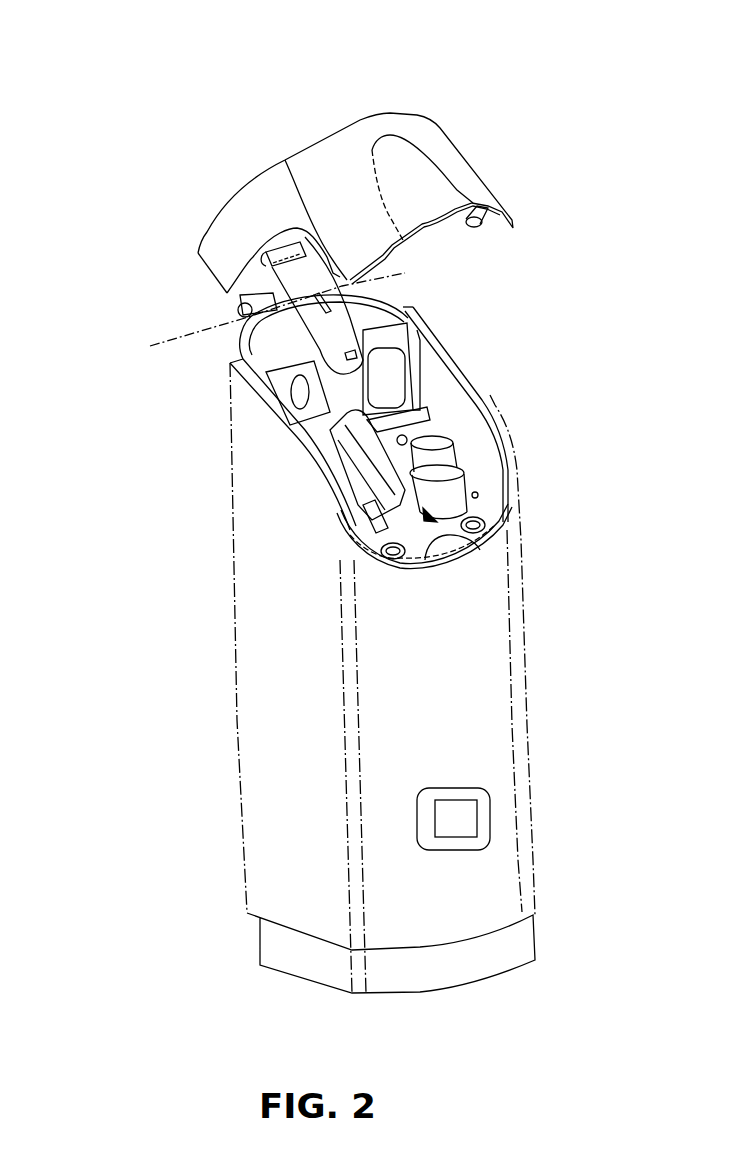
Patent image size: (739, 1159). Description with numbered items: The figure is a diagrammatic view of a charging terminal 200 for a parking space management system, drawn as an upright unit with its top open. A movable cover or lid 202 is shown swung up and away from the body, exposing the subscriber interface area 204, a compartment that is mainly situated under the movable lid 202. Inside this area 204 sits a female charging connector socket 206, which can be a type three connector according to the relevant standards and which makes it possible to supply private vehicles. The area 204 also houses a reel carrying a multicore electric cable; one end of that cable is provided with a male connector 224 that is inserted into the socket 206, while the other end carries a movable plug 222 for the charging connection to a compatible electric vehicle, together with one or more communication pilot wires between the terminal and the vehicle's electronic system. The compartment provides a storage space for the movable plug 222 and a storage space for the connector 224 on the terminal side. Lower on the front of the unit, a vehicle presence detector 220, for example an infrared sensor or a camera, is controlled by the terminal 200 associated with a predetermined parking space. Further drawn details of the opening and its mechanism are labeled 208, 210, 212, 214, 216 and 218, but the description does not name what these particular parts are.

The charging terminal 200 is at (177, 68).
The movable lid 202 is at (462, 128).
The subscriber interface area 204 is at (468, 298).
The female charging connector socket 206 is at (390, 385).
The hinge axis 208 is at (167, 340).
The fastener boss 210 is at (483, 520).
The fastener boss 212 is at (393, 553).
The housing rim 214 is at (503, 537).
The floor plate 216 is at (453, 553).
The hinge arm 218 is at (240, 310).
The vehicle presence detector 220 is at (477, 822).
The movable plug 222 is at (380, 442).
The male connector 224 is at (453, 450).